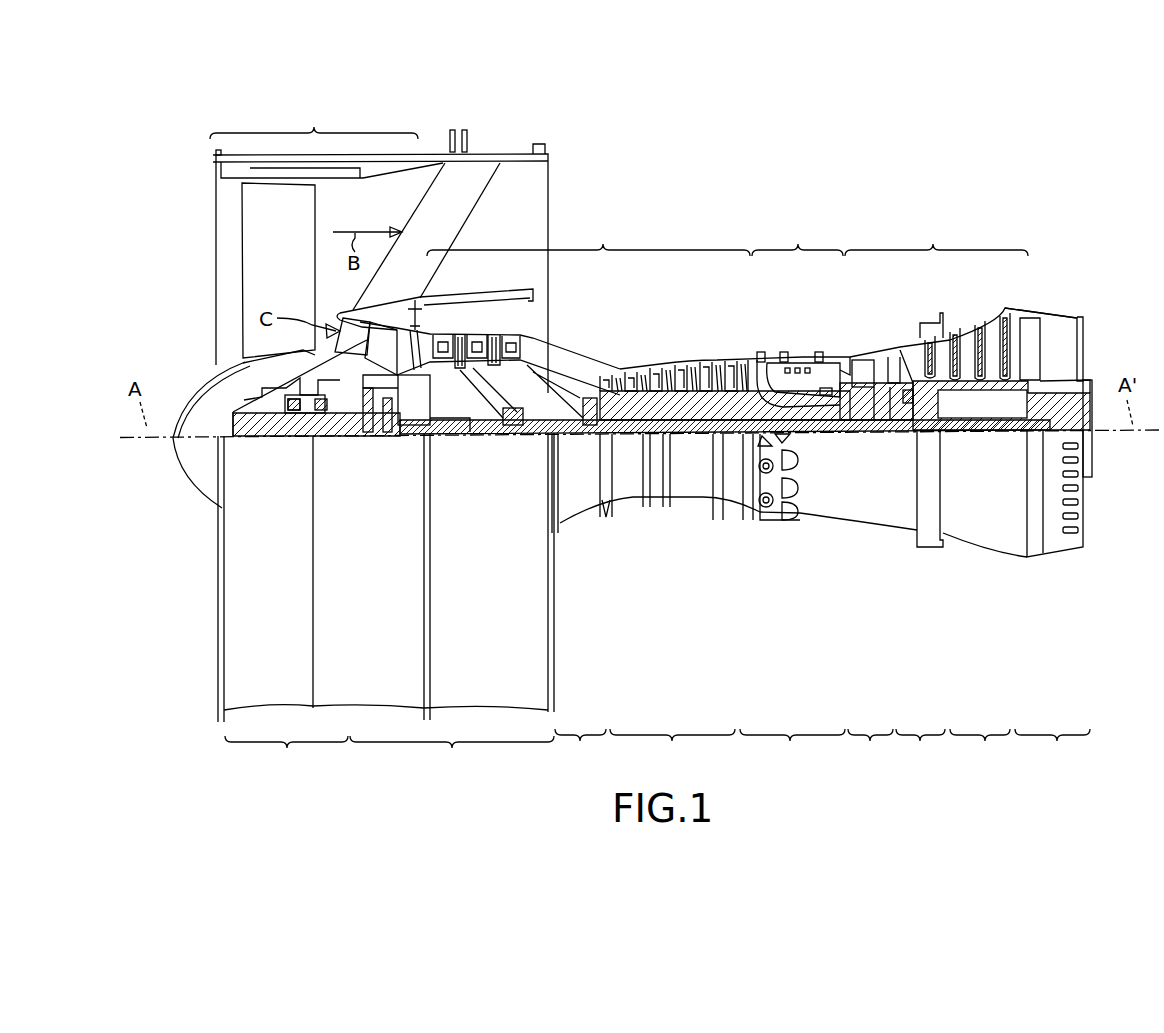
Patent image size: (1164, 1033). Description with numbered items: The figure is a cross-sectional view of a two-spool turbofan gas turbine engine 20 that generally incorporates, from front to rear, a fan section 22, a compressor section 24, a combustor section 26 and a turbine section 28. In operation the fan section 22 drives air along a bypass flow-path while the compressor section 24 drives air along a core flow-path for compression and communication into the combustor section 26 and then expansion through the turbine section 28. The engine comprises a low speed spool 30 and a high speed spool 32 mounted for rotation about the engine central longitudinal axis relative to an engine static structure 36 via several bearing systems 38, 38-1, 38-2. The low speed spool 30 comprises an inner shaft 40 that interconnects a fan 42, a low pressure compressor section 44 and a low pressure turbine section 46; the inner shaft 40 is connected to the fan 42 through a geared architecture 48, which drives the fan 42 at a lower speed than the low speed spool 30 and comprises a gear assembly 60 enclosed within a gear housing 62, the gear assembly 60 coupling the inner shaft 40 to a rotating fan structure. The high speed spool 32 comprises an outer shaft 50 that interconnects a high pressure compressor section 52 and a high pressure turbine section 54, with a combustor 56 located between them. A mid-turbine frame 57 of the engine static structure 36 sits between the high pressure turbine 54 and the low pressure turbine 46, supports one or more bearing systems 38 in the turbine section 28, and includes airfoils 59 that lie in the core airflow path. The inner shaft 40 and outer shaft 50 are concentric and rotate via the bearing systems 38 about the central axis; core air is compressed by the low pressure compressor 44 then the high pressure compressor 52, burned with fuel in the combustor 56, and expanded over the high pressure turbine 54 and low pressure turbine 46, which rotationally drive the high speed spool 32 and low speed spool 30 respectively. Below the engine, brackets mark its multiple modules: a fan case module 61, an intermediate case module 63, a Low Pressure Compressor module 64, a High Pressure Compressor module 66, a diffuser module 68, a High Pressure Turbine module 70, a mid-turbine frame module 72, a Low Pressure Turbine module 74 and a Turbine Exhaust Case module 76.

The gas turbine engine 20 is at (833, 180).
The fan section 22 is at (314, 133).
The compressor section 24 is at (603, 250).
The combustor section 26 is at (798, 250).
The turbine section 28 is at (933, 250).
The low speed spool 30 is at (693, 452).
The high speed spool 32 is at (735, 405).
The engine static structure 36 is at (192, 728).
The bearing system 38 is at (895, 432).
The bearing system 38-1 is at (292, 436).
The bearing system 38-2 is at (506, 436).
The inner shaft 40 is at (572, 440).
The fan 42 is at (291, 276).
The low pressure compressor section 44 is at (490, 345).
The low pressure turbine section 46 is at (968, 346).
The geared architecture 48 is at (388, 458).
The outer shaft 50 is at (798, 422).
The high pressure compressor section 52 is at (680, 405).
The high pressure turbine section 54 is at (860, 358).
The combustor 56 is at (798, 380).
The mid-turbine frame 57 is at (880, 362).
The airfoils 59 is at (900, 360).
The gear assembly 60 is at (418, 428).
The fan case module 61 is at (286, 759).
The gear housing 62 is at (398, 393).
The intermediate case module 63 is at (452, 759).
The Low Pressure Compressor (LPC) module 64 is at (580, 752).
The High Pressure Compressor (HPC) module 66 is at (672, 752).
The diffuser module 68 is at (792, 752).
The High Pressure Turbine (HPT) module 70 is at (870, 749).
The mid-turbine frame (MTF) module 72 is at (920, 749).
The Low Pressure Turbine (LPT) module 74 is at (980, 749).
The Turbine Exhaust Case (TEC) module 76 is at (1052, 749).